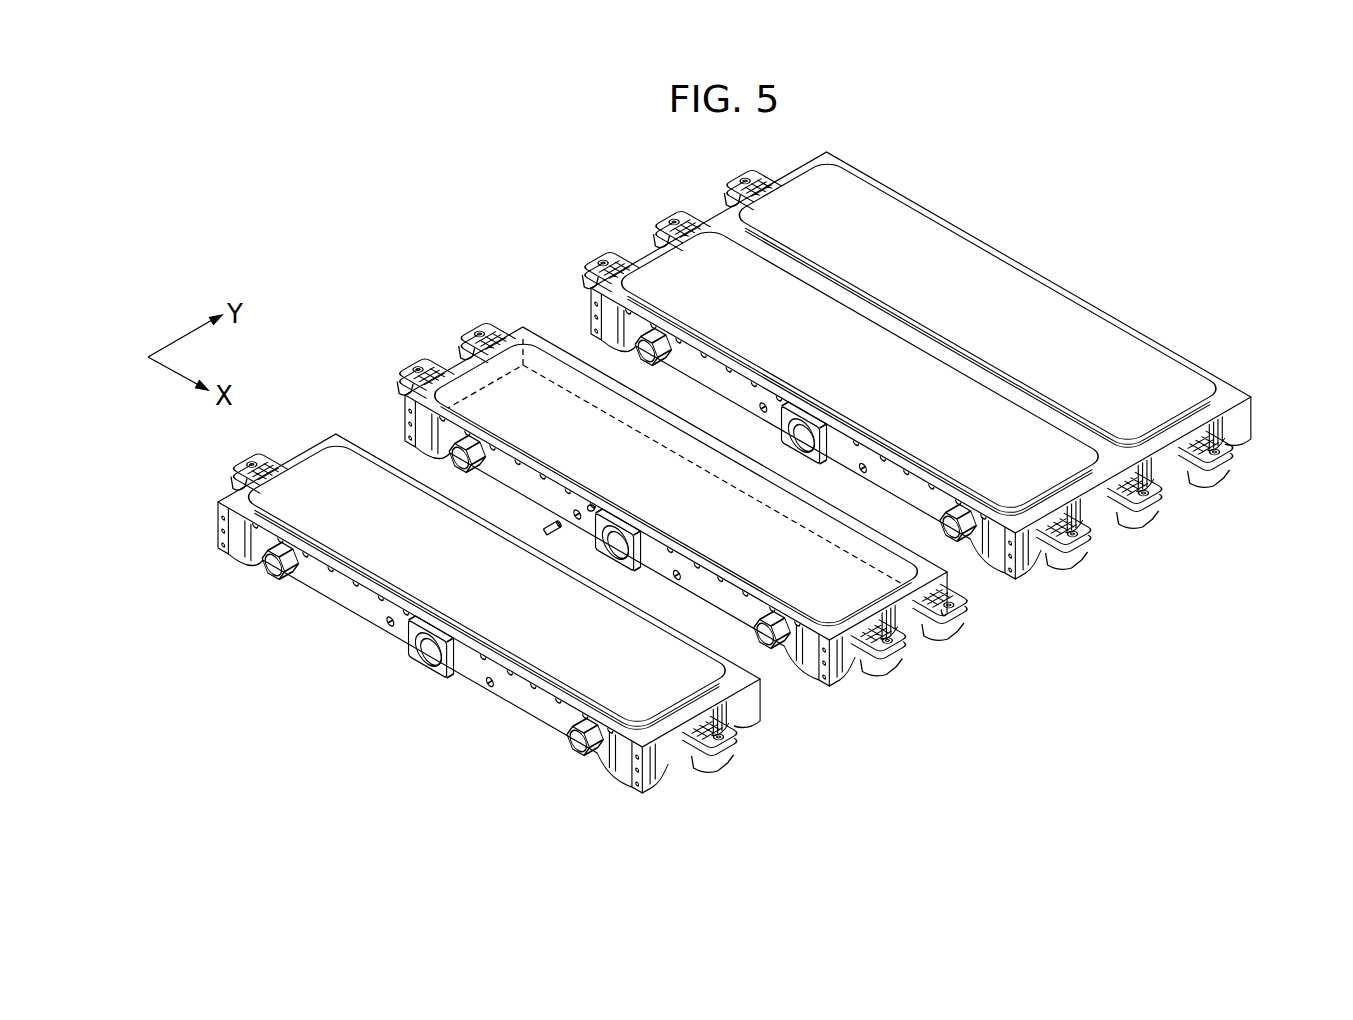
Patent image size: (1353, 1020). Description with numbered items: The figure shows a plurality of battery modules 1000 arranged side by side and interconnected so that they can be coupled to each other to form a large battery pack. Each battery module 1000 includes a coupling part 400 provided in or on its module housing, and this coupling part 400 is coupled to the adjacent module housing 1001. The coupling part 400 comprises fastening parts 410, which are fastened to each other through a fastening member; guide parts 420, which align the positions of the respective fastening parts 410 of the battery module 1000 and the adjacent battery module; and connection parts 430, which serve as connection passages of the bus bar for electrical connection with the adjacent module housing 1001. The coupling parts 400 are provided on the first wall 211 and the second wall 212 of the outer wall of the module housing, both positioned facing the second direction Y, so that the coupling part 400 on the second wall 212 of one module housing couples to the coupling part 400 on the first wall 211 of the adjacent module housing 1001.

The battery module 1000 is at (863, 662).
The adjacent module housing 1001 is at (538, 724).
The first wall 211 is at (880, 553).
The second wall 212 is at (745, 608).
The coupling part 400 is at (345, 190).
The fastening part 410 is at (404, 400).
The guide part 420 is at (548, 522).
The connection part 430 is at (595, 517).